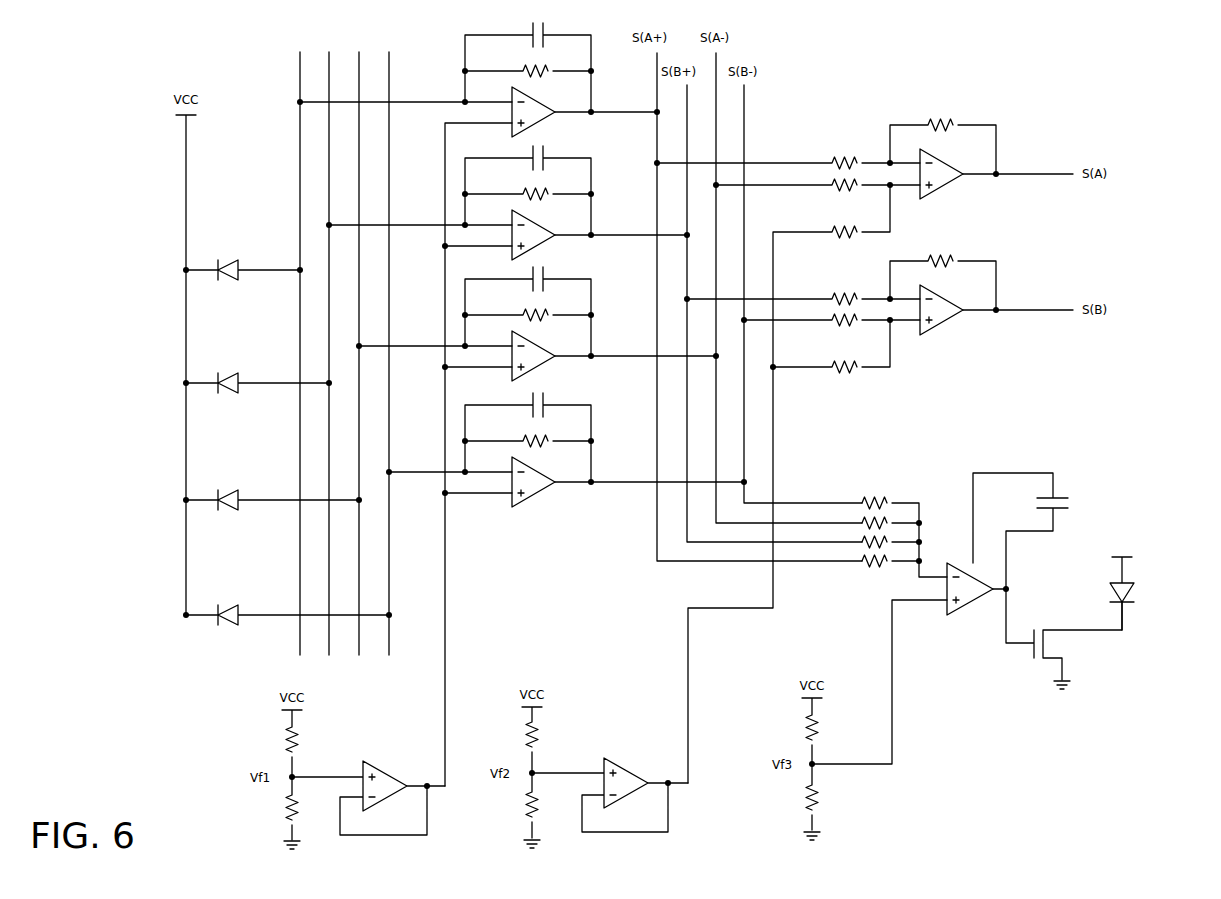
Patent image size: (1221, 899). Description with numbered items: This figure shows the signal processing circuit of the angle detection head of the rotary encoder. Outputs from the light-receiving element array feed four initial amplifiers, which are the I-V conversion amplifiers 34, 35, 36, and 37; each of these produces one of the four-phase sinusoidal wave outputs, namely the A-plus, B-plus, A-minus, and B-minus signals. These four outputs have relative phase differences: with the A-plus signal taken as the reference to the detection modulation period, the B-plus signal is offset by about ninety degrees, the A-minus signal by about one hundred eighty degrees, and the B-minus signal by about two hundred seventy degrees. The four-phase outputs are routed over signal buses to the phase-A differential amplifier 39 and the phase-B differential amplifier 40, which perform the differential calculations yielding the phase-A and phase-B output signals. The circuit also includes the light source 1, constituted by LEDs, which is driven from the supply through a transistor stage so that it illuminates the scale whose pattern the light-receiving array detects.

The I-V conversion amplifier 34 is at (538, 118).
The I-V conversion amplifier 35 is at (538, 241).
The I-V conversion amplifier 36 is at (538, 362).
The I-V conversion amplifier 37 is at (538, 488).
The phase-A differential amplifier 39 is at (948, 182).
The phase-B differential amplifier 40 is at (948, 318).
The light source 1 is at (1134, 598).